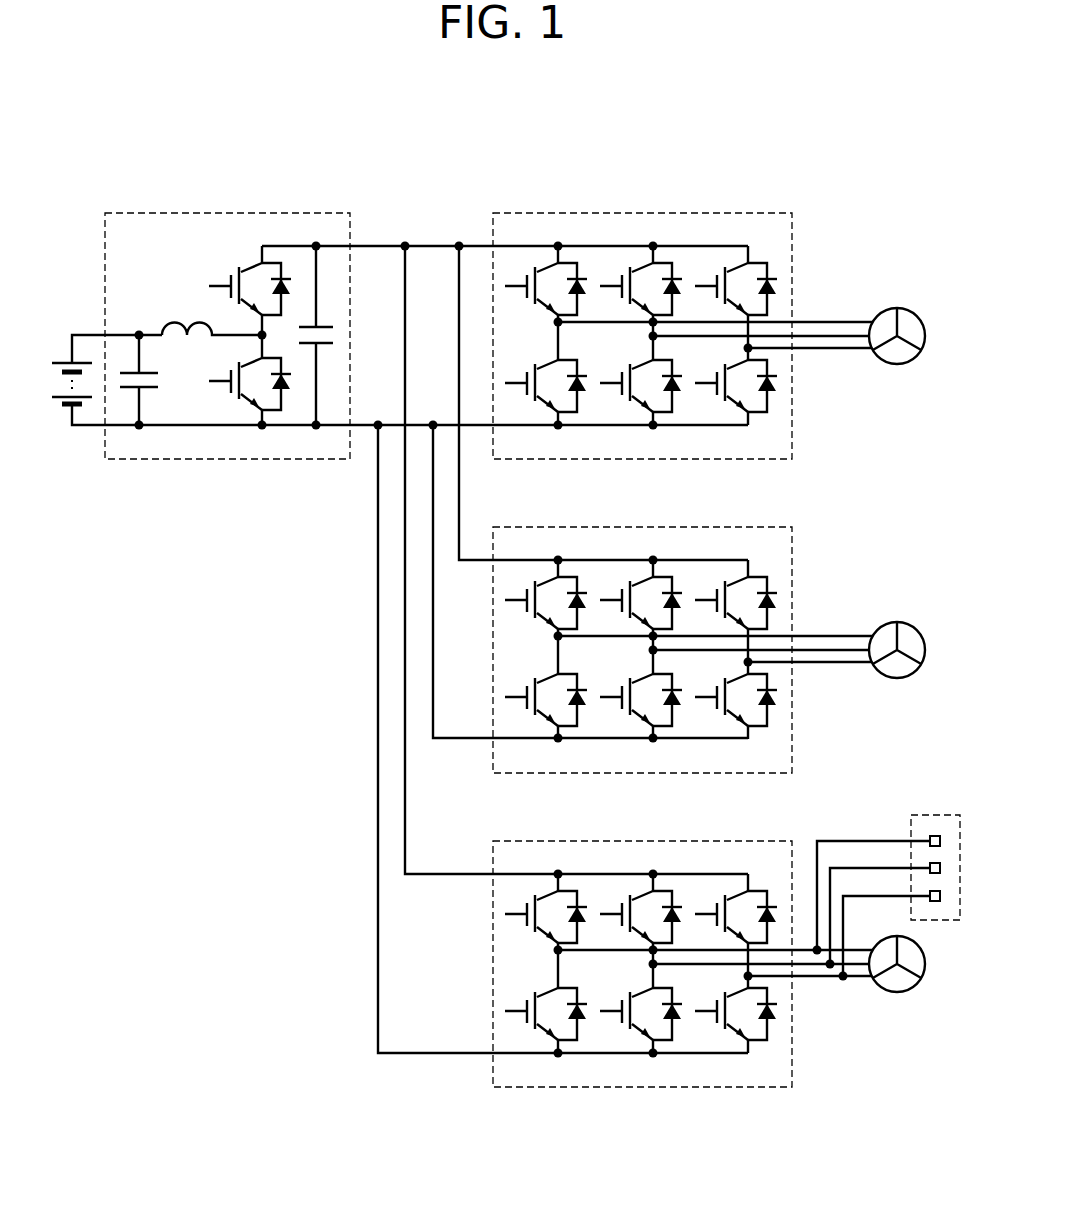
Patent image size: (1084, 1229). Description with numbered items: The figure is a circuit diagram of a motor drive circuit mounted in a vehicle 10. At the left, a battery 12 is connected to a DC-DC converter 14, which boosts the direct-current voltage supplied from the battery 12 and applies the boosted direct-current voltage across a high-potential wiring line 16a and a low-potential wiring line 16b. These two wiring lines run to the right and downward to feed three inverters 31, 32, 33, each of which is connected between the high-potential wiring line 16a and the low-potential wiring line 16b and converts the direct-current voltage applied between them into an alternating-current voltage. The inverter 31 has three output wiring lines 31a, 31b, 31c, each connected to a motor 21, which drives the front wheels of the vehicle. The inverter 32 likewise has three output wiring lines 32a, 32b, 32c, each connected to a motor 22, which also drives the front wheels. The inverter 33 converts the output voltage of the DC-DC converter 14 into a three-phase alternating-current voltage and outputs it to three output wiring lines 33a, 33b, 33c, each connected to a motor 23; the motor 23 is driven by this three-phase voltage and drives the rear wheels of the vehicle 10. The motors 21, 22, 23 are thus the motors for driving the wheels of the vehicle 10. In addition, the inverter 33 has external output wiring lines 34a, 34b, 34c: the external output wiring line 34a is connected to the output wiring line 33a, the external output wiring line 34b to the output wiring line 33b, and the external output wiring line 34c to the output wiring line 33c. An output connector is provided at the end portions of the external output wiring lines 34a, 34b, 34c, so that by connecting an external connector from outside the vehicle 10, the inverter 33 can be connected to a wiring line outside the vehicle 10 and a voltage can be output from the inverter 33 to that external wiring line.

The vehicle 10 is at (88, 114).
The battery 12 is at (58, 423).
The DC-DC converter 14 is at (250, 212).
The high-potential wiring line 16a is at (420, 245).
The low-potential wiring line 16b is at (420, 423).
The motor 21 is at (912, 307).
The motor 22 is at (912, 621).
The motor 23 is at (908, 988).
The inverter 31 is at (745, 212).
The output wiring line 31a is at (800, 320).
The output wiring line 31b is at (817, 330).
The output wiring line 31c is at (835, 347).
The inverter 32 is at (745, 527).
The output wiring line 32a is at (800, 634).
The output wiring line 32b is at (817, 644).
The output wiring line 32c is at (835, 661).
The inverter 33 is at (745, 840).
The output wiring line 33a is at (798, 953).
The output wiring line 33b is at (817, 967).
The output wiring line 33c is at (835, 983).
The external output wiring line 34a is at (822, 840).
The external output wiring line 34b is at (837, 867).
The external output wiring line 34c is at (858, 895).